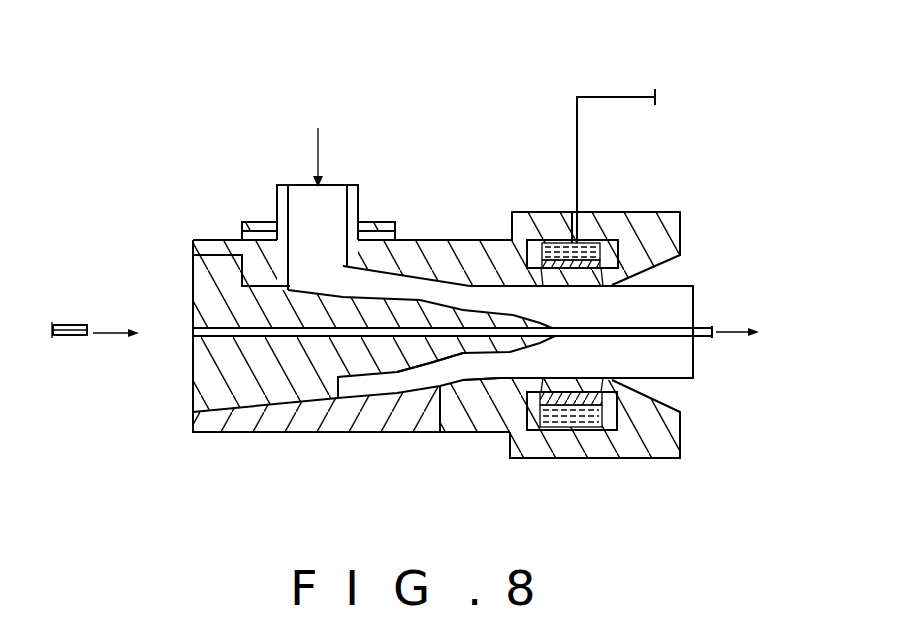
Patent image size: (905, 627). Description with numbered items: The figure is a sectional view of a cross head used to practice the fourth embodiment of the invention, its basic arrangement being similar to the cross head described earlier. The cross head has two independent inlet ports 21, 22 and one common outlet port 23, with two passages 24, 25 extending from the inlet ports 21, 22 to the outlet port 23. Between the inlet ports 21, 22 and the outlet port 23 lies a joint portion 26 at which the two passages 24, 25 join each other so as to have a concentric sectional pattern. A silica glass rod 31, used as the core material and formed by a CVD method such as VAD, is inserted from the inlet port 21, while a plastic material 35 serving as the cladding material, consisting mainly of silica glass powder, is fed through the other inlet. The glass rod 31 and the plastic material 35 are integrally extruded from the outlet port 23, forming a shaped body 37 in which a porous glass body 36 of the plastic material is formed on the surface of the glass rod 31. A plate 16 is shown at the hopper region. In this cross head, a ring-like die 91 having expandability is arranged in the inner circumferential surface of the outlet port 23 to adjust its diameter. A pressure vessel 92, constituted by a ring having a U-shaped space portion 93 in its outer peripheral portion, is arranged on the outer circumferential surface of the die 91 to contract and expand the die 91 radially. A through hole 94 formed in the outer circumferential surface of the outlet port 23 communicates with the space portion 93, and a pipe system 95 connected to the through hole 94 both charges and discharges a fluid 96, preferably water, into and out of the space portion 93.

The mounting plate 16 is at (360, 206).
The inlet port 21 is at (205, 345).
The inlet port 22 is at (284, 212).
The outlet port 23 is at (652, 279).
The passage 24 is at (392, 345).
The passage 25 is at (423, 292).
The joint portion 26 is at (497, 362).
The silica glass rod 31 is at (68, 338).
The plastic material 35 is at (340, 190).
The porous glass body 36 is at (682, 313).
The shaped body 37 is at (705, 387).
The ring-like die 91 is at (572, 390).
The pressure vessel 92 is at (590, 430).
The space portion 93 is at (590, 245).
The through hole 94 is at (572, 242).
The pipe system 95 is at (602, 96).
The fluid 96 is at (548, 244).